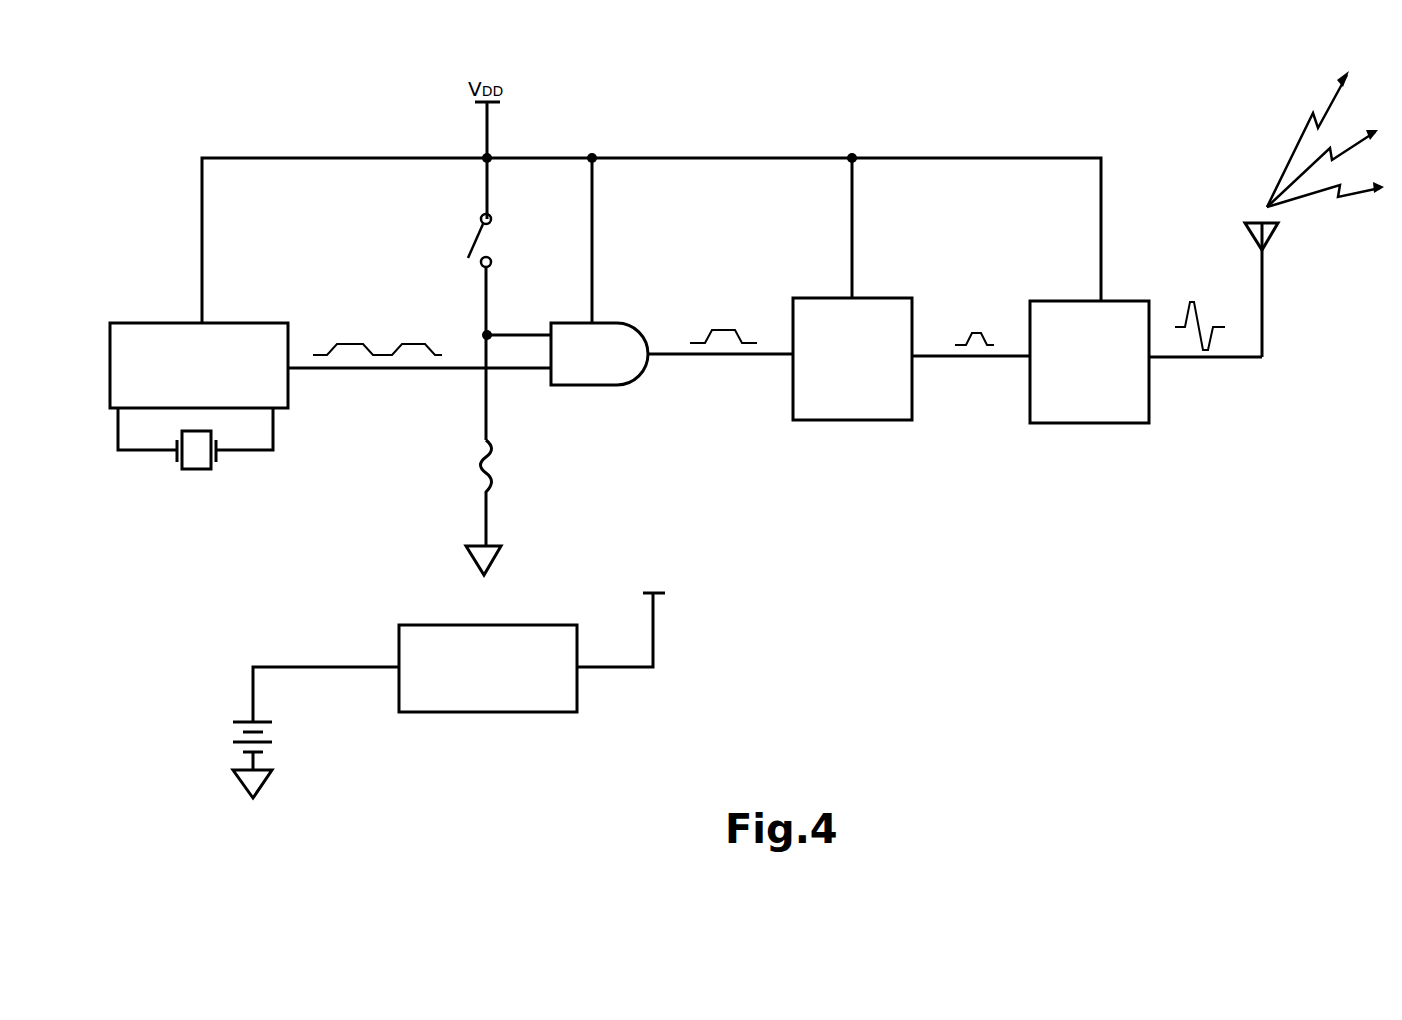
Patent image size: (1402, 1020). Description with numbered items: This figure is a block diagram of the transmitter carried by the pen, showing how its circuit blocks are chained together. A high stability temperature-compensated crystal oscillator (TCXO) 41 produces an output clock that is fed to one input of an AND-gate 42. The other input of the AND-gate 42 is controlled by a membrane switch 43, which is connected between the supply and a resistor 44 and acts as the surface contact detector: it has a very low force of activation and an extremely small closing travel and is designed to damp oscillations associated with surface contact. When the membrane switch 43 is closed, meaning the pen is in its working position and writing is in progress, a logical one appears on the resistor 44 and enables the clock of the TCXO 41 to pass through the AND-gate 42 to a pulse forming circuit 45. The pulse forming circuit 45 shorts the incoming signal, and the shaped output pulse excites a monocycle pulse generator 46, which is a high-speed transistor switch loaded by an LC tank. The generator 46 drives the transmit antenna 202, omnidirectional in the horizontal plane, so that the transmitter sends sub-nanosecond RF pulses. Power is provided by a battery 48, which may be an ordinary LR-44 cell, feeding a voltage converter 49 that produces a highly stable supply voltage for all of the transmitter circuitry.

The temperature-compensated crystal oscillator (TCXO) 41 is at (162, 323).
The AND-gate 42 is at (617, 323).
The membrane switch 43 is at (494, 256).
The resistor 44 is at (500, 479).
The pulse forming circuit 45 is at (831, 298).
The monocycle pulse generator 46 is at (1072, 301).
The battery 48 is at (237, 742).
The voltage converter 49 is at (427, 625).
The transmit antenna 202 is at (1262, 290).